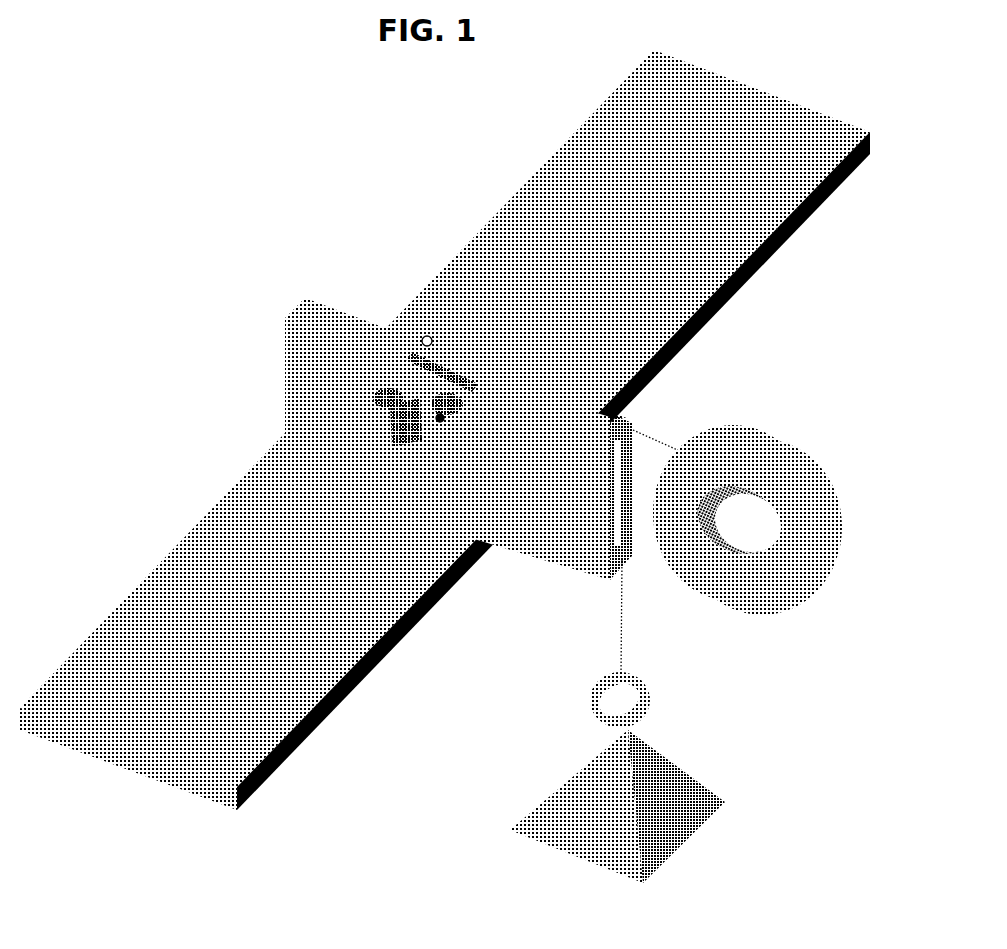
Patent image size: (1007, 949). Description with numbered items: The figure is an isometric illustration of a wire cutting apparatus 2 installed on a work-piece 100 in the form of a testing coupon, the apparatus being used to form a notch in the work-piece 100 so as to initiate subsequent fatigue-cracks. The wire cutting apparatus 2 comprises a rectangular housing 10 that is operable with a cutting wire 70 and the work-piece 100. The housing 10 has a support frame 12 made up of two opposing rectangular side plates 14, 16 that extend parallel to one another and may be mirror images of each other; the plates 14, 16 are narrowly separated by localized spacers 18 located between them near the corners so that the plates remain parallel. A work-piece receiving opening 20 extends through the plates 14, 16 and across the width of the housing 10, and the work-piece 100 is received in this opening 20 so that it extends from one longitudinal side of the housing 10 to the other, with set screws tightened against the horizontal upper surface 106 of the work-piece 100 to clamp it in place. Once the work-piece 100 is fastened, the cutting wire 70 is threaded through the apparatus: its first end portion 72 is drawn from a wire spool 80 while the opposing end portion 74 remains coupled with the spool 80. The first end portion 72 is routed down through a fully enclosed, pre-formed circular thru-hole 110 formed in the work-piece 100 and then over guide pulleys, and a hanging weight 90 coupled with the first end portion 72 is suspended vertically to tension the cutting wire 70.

The wire cutting apparatus 2 is at (445, 466).
The rectangular housing 10 is at (480, 539).
The support frame 12 is at (387, 397).
The side plate 14 is at (307, 355).
The side plate 16 is at (362, 325).
The spacers 18 is at (318, 324).
The work-piece receiving opening 20 is at (332, 392).
The cutting wire 70 is at (661, 620).
The first end portion 72 is at (623, 630).
The opposing end portion 74 is at (648, 435).
The wire spool 80 is at (753, 412).
The hanging weight 90 is at (697, 752).
The work-piece 100 is at (445, 449).
The upper surface 106 is at (100, 700).
The thru-hole 110 is at (441, 422).